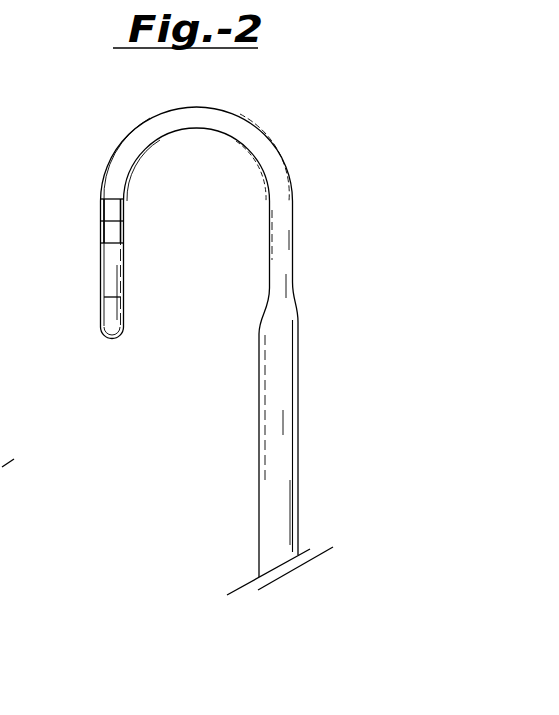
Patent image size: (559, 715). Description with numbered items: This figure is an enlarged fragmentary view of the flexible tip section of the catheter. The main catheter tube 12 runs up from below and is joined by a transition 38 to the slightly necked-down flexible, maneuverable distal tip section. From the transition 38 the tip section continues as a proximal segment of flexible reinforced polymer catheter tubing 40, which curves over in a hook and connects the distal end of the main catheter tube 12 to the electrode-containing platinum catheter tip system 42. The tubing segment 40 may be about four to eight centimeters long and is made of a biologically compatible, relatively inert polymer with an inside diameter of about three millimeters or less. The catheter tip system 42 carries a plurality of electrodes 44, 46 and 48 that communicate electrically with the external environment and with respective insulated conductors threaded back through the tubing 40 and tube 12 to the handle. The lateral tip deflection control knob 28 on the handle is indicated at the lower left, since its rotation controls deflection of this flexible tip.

The main catheter tube 12 is at (298, 432).
The rotatable lateral tip deflection control knob 28 is at (2, 467).
The transition 38 is at (293, 285).
The flexible reinforced polymer catheter tubing 40 is at (293, 230).
The electrode-containing platinum catheter tip system 42 is at (113, 339).
The electrode 44 is at (100, 199).
The electrode 46 is at (100, 221).
The electrode 48 is at (100, 243).